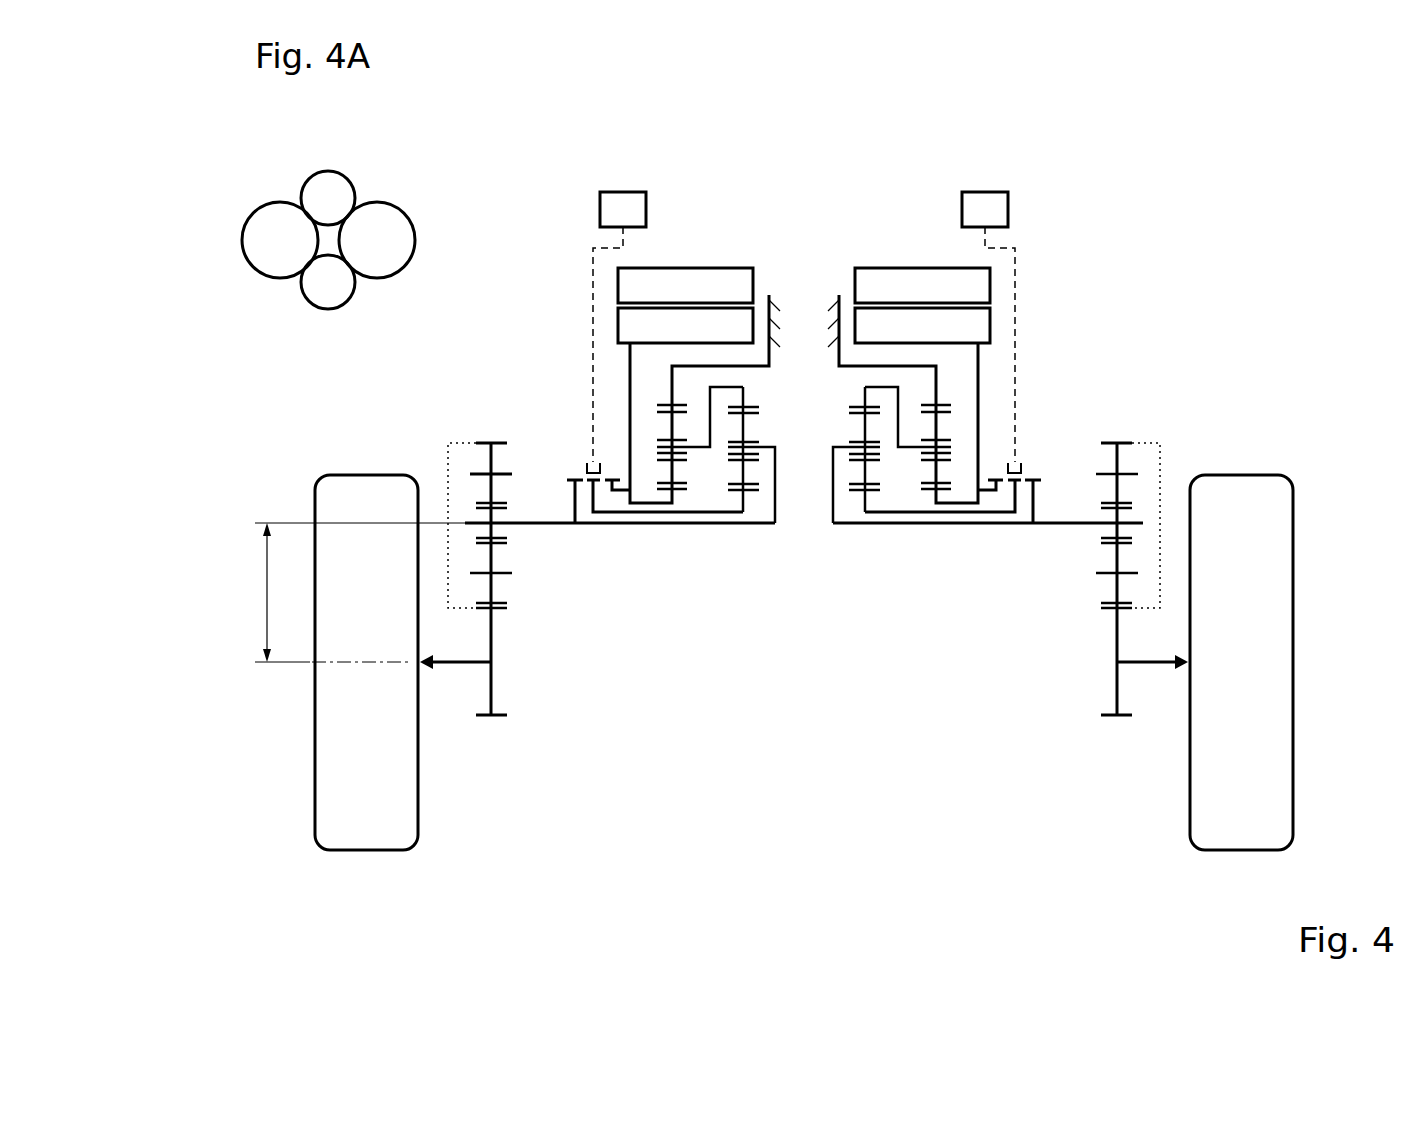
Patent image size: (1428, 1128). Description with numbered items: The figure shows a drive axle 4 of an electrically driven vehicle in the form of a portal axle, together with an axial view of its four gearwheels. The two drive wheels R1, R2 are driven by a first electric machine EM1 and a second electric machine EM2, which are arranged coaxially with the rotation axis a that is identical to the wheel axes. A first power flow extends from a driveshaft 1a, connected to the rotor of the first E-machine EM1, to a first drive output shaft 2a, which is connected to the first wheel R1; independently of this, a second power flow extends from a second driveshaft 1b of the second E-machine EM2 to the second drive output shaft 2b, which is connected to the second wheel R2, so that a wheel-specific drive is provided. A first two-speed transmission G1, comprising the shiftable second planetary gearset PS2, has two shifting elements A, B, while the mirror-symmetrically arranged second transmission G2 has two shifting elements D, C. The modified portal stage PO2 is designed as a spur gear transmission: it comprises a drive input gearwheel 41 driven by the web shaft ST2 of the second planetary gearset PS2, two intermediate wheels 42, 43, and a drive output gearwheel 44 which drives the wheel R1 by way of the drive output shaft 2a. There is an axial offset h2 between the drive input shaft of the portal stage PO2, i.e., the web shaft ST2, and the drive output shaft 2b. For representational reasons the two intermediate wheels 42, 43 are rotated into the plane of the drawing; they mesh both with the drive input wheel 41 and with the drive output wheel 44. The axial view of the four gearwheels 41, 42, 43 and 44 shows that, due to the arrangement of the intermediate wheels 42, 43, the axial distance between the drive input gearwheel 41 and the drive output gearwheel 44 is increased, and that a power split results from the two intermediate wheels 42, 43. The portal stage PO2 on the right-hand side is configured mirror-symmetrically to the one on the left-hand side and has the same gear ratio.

In FIG. 4, the drive axle 4 is at (1146, 264).
In FIG. 4, the driveshaft 1a is at (630, 395).
In FIG. 4, the second driveshaft 1b is at (980, 400).
In FIG. 4, the first electric machine EM1 is at (669, 264).
In FIG. 4, the second electric machine EM2 is at (932, 265).
In FIG. 4, the second shiftable planetary gearset PS2 is at (742, 540).
In FIG. 4, the web shaft ST2 is at (757, 528).
In FIG. 4, the portal stage PO2 is at (491, 735).
In FIG. 4, the first two-speed transmission G1 is at (695, 582).
In FIG. 4, the second transmission G2 is at (908, 584).
In FIG. 4, the shifting element A is at (575, 480).
In FIG. 4, the shifting element B is at (608, 463).
In FIG. 4, the shifting element C is at (1034, 480).
In FIG. 4, the shifting element D is at (999, 463).
In FIG. 4, the first drive wheel R1 is at (370, 810).
In FIG. 4, the second drive wheel R2 is at (1235, 813).
In FIG. 4, the first drive output shaft 2a is at (445, 670).
In FIG. 4, the second drive output shaft 2b is at (1147, 662).
In FIG. 4A, the drive input gearwheel 41 is at (328, 282).
In FIG. 4, the drive input gearwheel 41 is at (491, 513).
In FIG. 4A, the intermediate wheel 42 is at (280, 240).
In FIG. 4, the intermediate wheel 42 is at (491, 553).
In FIG. 4A, the intermediate wheel 43 is at (377, 240).
In FIG. 4, the intermediate wheel 43 is at (491, 463).
In FIG. 4A, the drive output gearwheel 44 is at (328, 198).
In FIG. 4, the drive output gearwheel 44 is at (491, 633).
In FIG. 4, the axial offset h2 is at (266, 594).
In FIG. 4, the rotation axis a is at (370, 660).